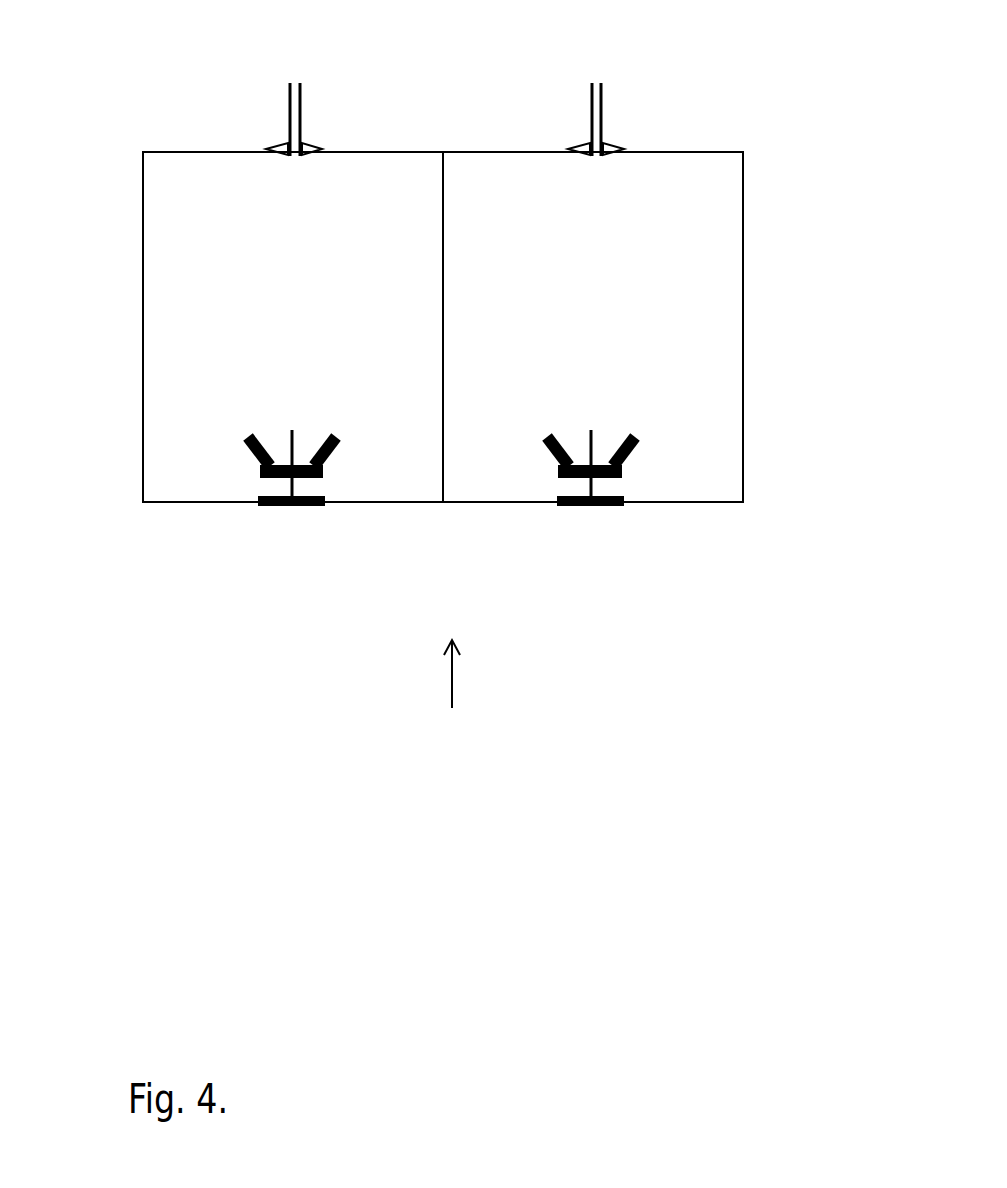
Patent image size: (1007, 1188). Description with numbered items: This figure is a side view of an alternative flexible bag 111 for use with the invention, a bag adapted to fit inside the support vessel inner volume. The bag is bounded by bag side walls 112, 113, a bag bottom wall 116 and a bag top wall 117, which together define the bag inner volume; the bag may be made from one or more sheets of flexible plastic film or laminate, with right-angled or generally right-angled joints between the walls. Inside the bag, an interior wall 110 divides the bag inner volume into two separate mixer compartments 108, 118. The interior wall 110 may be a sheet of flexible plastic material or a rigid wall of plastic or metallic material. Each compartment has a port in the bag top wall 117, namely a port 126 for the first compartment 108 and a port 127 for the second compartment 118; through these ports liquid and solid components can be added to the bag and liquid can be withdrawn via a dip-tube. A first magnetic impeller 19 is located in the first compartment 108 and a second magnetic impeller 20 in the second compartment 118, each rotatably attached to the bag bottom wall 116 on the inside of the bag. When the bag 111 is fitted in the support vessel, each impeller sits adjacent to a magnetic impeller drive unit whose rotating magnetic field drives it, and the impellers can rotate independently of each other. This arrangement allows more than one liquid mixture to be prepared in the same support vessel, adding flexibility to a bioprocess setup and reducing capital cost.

The mixer compartment 108 is at (293, 327).
The mixer compartment 118 is at (593, 327).
The bag side wall 112 is at (143, 328).
The bag side wall 113 is at (743, 326).
The bag top wall 117 is at (506, 152).
The bag bottom wall 116 is at (505, 502).
The interior wall 110 is at (443, 435).
The port 126 is at (291, 148).
The port 127 is at (597, 147).
The first magnetic impeller 19 is at (263, 478).
The second magnetic impeller 20 is at (621, 478).
The flexible bag 111 is at (451, 694).